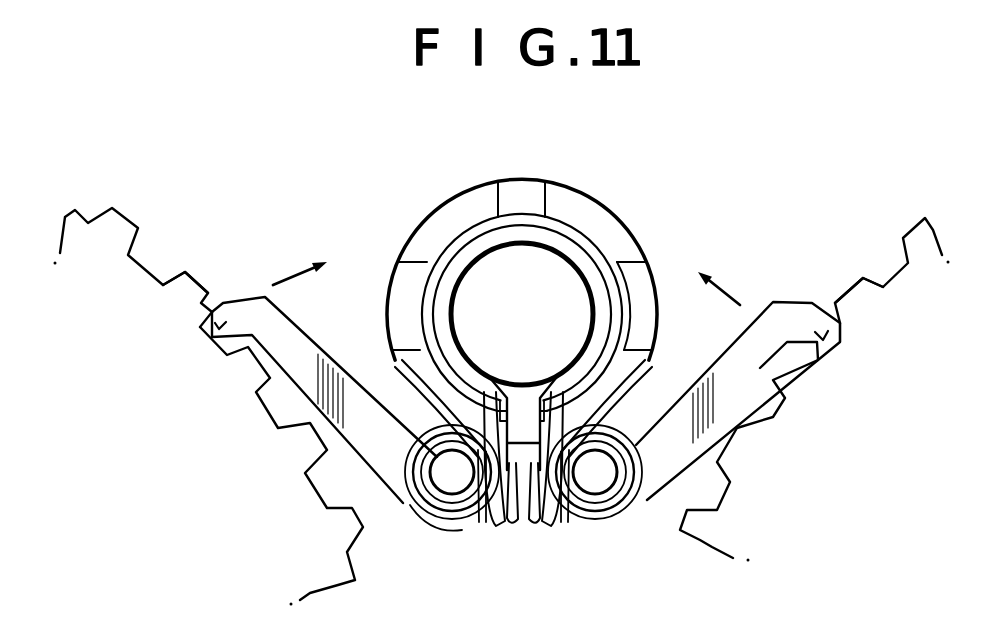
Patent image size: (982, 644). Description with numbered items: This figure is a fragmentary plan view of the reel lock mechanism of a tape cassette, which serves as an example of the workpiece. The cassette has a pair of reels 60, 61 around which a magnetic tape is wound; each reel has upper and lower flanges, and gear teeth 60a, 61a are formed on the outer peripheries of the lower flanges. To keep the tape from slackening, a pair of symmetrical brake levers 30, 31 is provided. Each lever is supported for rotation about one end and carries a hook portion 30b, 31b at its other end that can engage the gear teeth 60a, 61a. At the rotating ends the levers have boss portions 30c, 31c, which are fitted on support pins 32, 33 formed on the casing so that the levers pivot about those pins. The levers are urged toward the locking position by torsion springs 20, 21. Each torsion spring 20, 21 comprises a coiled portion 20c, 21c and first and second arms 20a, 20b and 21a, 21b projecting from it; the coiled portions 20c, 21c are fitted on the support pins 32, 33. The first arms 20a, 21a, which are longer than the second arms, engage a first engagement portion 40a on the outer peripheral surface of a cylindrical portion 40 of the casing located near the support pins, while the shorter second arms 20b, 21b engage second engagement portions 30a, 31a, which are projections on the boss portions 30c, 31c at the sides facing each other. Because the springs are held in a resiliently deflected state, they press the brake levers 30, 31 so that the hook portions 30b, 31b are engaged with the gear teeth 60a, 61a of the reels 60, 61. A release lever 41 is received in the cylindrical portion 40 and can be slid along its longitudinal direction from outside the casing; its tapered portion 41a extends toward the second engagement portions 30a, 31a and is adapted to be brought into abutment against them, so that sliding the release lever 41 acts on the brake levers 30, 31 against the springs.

The torsion spring 20 is at (398, 506).
The first arm 20a is at (398, 392).
The second arm 20b is at (480, 535).
The coiled portion 20c is at (403, 463).
The torsion spring 21 is at (643, 518).
The first arm 21a is at (650, 368).
The second arm 21b is at (590, 530).
The coiled portion 21c is at (645, 465).
The brake lever 30 is at (310, 396).
The second engagement portion 30a is at (498, 532).
The hook portion 30b is at (208, 323).
The boss portion 30c is at (453, 527).
The brake lever 31 is at (723, 393).
The second engagement portion 31a is at (552, 532).
The hook portion 31b is at (841, 344).
The boss portion 31c is at (568, 398).
The support pin 32 is at (350, 434).
The support pin 33 is at (643, 498).
The cylindrical portion 40 is at (580, 208).
The first engagement portion 40a is at (480, 332).
The release lever 41 is at (490, 237).
The tapered portion 41a is at (513, 528).
The reel 60 is at (100, 192).
The gear teeth 60a is at (185, 268).
The reel 61 is at (893, 212).
The gear teeth 61a is at (867, 277).